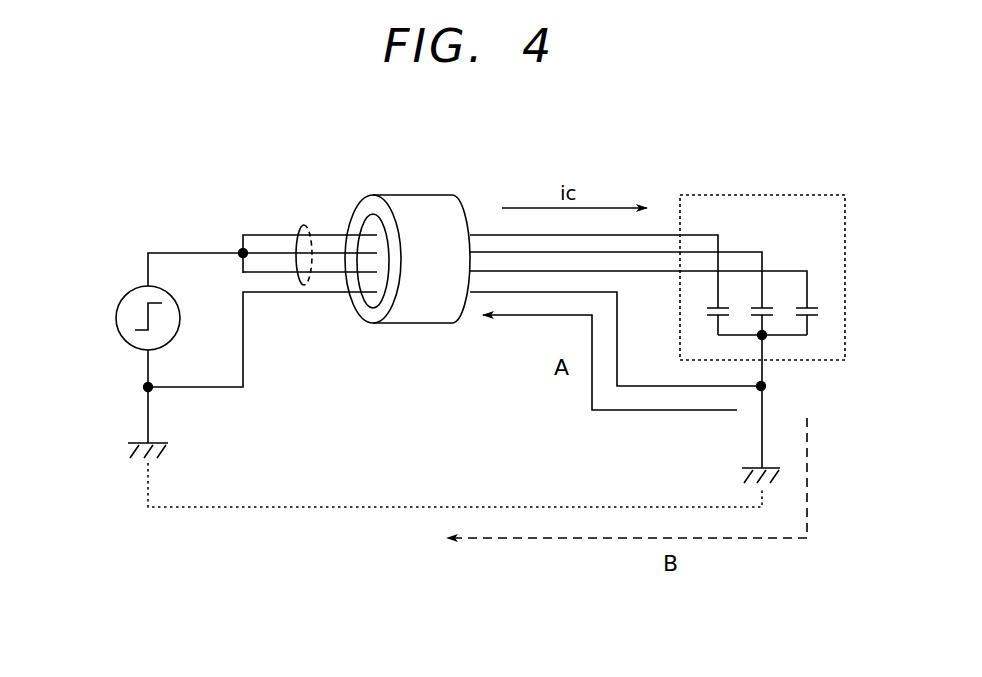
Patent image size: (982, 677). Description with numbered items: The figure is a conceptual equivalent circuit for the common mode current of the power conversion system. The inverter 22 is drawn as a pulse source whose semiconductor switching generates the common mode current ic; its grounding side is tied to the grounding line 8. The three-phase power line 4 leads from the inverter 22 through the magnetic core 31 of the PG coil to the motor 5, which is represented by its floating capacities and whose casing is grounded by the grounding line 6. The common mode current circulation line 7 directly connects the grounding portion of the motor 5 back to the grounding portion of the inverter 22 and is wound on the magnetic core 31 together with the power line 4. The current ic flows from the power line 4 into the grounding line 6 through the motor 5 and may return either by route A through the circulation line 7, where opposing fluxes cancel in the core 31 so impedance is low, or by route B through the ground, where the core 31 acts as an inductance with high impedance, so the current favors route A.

The inverter 22 is at (133, 287).
The grounding line 8 is at (148, 368).
The three-phase power line 4 is at (307, 227).
The common mode current circulation line 7 is at (273, 295).
The magnetic core 31 is at (417, 207).
The motor 5 is at (788, 270).
The grounding line 6 is at (763, 403).